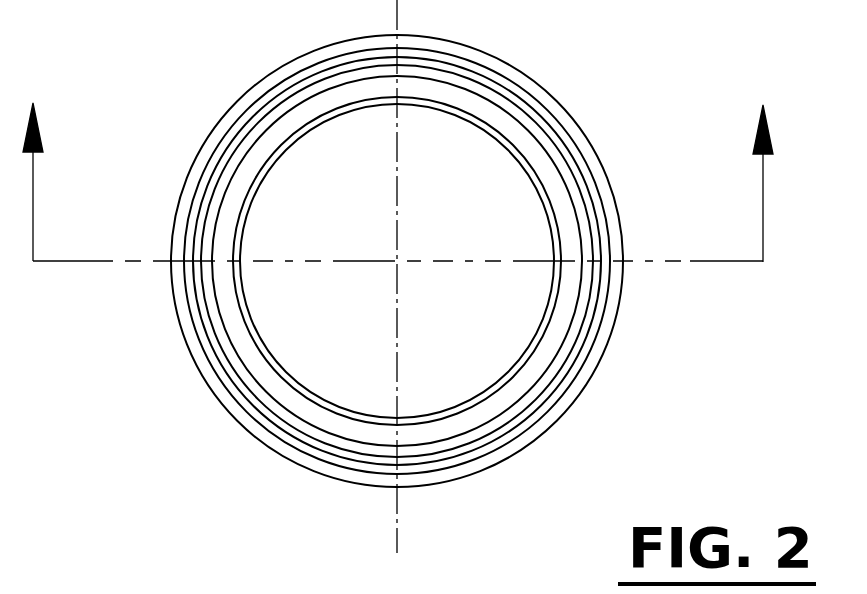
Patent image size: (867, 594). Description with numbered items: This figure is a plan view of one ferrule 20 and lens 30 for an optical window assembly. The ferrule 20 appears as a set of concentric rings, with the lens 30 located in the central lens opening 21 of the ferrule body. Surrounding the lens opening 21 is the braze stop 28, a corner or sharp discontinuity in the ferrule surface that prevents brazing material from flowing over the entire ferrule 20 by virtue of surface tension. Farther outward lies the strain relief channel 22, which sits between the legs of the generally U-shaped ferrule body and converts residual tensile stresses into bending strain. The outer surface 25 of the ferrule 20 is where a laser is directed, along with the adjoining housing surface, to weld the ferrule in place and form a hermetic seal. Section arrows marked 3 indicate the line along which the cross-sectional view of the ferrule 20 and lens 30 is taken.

The ferrule 20 is at (590, 383).
The lens opening 21 is at (543, 187).
The strain relief channel 22 is at (495, 89).
The surface 25 is at (547, 103).
The braze stop 28 is at (550, 157).
The lens 30 is at (290, 226).
The section line 3— 3 is at (398, 164).